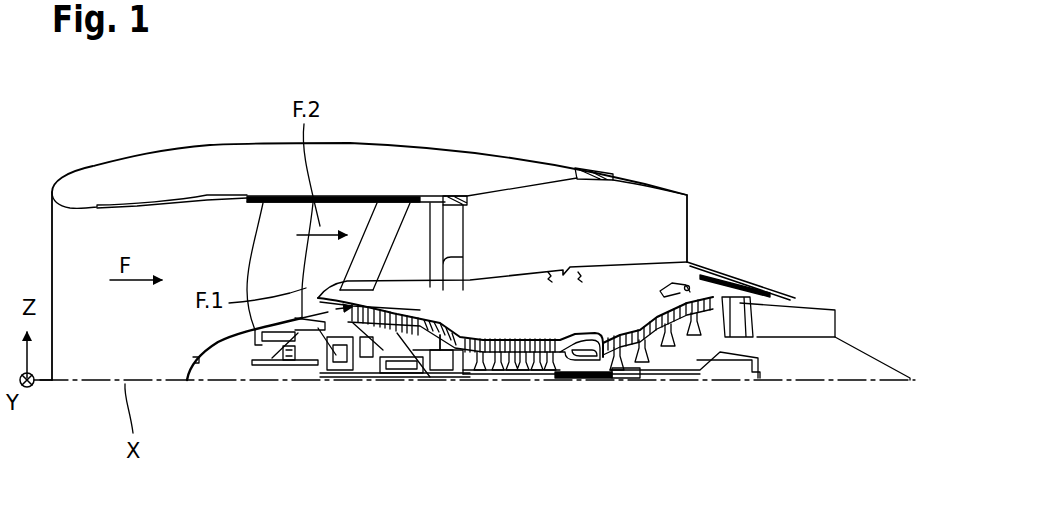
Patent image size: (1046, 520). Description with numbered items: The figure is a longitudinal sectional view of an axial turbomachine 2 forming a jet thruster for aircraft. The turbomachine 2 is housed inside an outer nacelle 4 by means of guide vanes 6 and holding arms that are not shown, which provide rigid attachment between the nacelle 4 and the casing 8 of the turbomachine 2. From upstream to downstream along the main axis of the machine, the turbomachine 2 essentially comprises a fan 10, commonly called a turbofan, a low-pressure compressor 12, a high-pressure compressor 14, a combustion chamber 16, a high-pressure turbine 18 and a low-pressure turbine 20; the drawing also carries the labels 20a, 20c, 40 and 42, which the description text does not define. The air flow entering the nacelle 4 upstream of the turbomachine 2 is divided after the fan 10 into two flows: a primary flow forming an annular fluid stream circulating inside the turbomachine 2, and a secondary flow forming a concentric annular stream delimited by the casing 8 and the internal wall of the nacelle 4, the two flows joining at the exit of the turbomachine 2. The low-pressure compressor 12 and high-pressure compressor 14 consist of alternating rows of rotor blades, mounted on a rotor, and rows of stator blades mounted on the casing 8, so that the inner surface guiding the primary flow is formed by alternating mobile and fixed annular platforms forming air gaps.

The turbomachine 2 is at (178, 364).
The outer nacelle 4 is at (220, 183).
The guide vanes 6 is at (380, 229).
The casing 8 is at (538, 320).
The fan 10 is at (263, 255).
The low-pressure compressor 12 is at (408, 299).
The high-pressure compressor 14 is at (500, 332).
The combustion chamber 16 is at (598, 331).
The high-pressure turbine 18 is at (622, 324).
The low-pressure turbine 20 is at (701, 283).
The lower core structure 20a is at (407, 387).
The core structure element 20c is at (408, 348).
The shaft bearing 40 is at (572, 387).
The shaft bearing support 42 is at (606, 383).